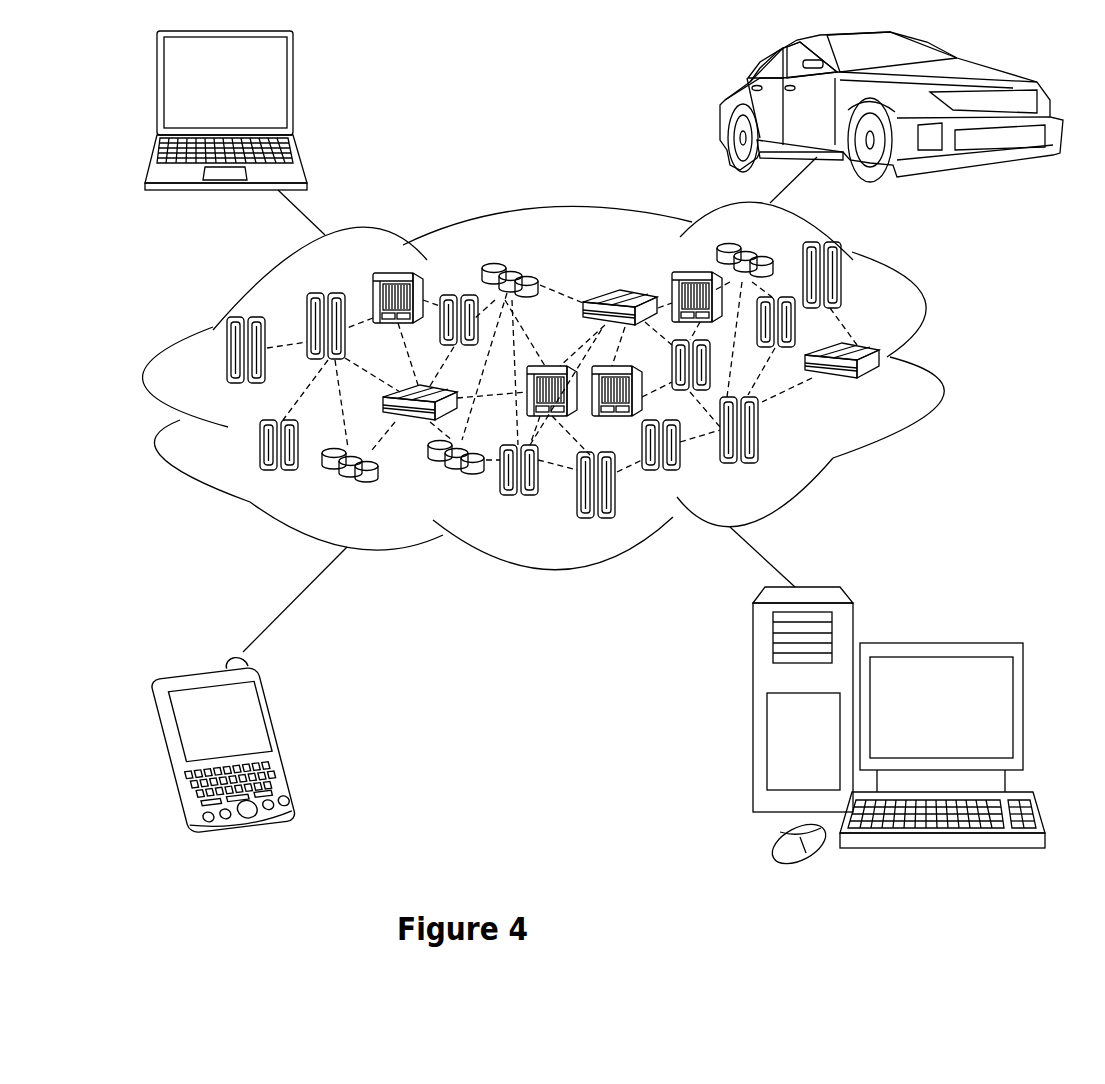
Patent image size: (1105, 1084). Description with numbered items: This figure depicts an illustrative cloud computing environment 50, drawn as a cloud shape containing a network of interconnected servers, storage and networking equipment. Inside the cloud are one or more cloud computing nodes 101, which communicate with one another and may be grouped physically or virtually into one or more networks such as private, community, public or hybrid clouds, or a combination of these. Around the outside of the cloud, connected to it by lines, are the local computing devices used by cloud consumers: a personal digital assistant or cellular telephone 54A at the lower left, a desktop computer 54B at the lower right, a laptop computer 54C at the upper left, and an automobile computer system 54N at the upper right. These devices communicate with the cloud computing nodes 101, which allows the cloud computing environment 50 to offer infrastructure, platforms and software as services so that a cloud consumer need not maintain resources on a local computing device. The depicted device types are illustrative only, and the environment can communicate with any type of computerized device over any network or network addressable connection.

The cloud computing environment 50 is at (940, 360).
The cloud computing nodes 101 is at (893, 393).
The personal digital assistant or cellular telephone 54A is at (283, 737).
The desktop computer 54B is at (940, 642).
The laptop computer 54C is at (297, 91).
The automobile computer system 54N is at (723, 110).